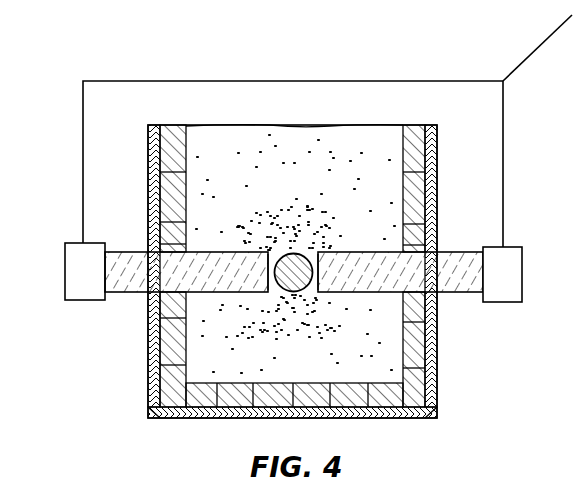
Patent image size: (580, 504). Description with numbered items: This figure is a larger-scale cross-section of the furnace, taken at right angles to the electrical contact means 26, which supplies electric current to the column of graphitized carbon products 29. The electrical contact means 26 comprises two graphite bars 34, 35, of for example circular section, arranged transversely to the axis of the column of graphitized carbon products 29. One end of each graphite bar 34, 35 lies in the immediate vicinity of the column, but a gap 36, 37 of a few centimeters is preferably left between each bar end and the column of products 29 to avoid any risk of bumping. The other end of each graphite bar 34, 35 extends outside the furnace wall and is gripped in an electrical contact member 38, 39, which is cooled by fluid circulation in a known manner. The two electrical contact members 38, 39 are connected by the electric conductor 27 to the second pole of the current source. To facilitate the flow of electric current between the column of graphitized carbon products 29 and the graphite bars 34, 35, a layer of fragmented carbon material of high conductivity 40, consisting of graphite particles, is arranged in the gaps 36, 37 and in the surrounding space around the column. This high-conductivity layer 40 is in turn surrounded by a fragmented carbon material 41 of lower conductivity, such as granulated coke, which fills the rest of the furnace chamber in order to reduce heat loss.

The electrical contact means 26 is at (300, 301).
The electric conductor 27 is at (527, 58).
The column of graphitized carbon products 29 is at (293, 291).
The graphite bar 34 is at (137, 283).
The graphite bar 35 is at (463, 293).
The gap 36 is at (275, 291).
The gap 37 is at (313, 291).
The electrical contact member 38 is at (65, 255).
The electrical contact member 39 is at (513, 256).
The layer of fragmented carbon material of high conductivity 40 is at (325, 215).
The fragmented carbon material of lower conductivity 41 is at (241, 138).